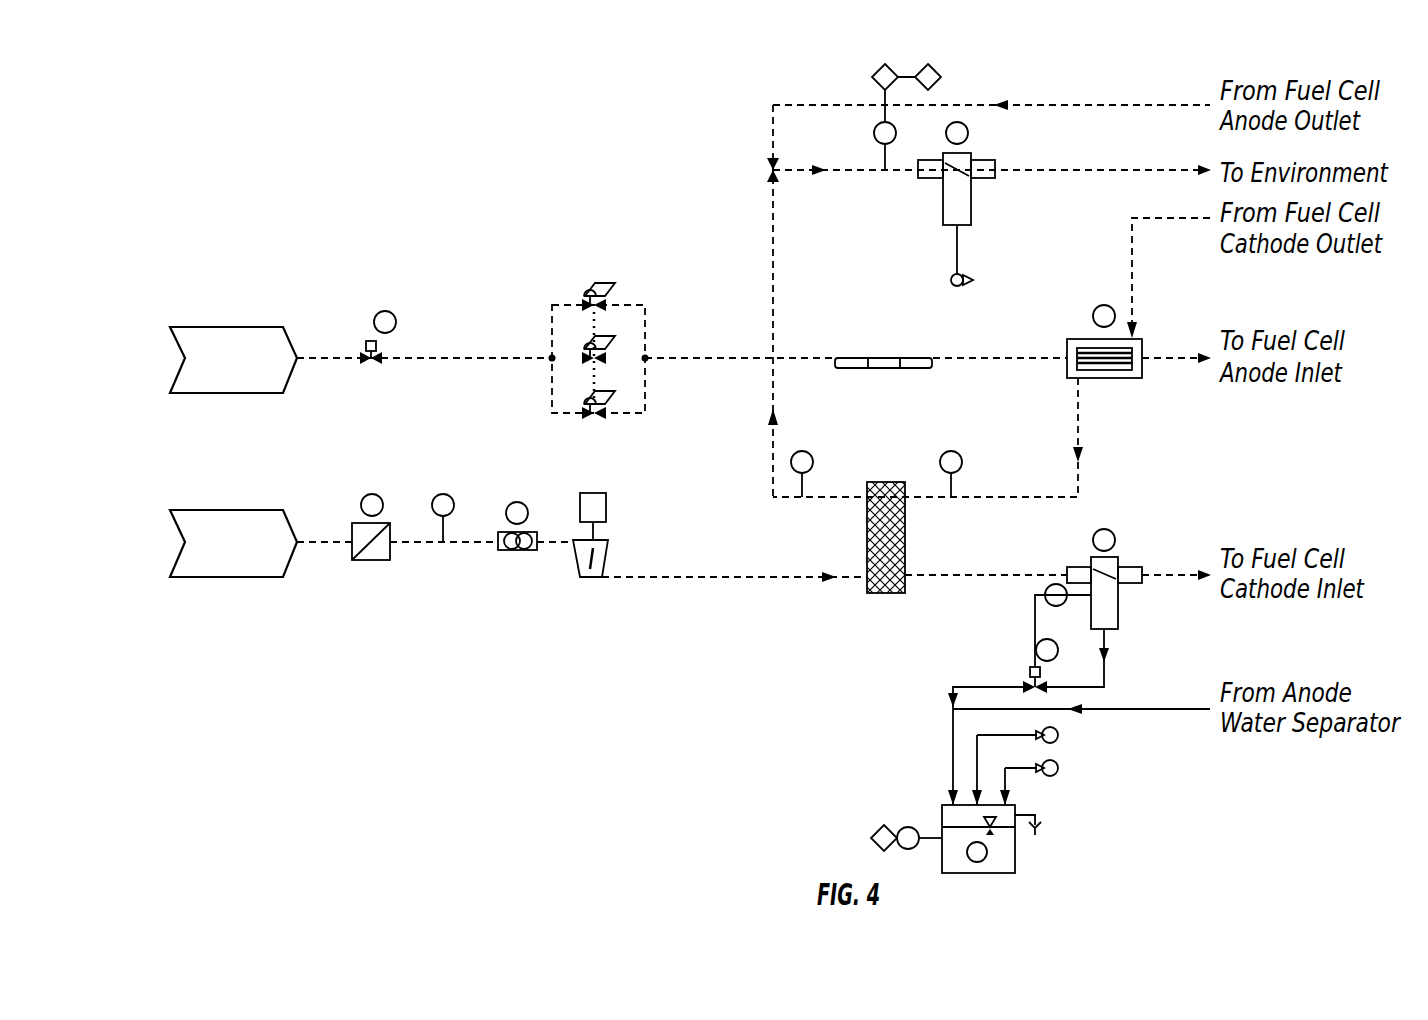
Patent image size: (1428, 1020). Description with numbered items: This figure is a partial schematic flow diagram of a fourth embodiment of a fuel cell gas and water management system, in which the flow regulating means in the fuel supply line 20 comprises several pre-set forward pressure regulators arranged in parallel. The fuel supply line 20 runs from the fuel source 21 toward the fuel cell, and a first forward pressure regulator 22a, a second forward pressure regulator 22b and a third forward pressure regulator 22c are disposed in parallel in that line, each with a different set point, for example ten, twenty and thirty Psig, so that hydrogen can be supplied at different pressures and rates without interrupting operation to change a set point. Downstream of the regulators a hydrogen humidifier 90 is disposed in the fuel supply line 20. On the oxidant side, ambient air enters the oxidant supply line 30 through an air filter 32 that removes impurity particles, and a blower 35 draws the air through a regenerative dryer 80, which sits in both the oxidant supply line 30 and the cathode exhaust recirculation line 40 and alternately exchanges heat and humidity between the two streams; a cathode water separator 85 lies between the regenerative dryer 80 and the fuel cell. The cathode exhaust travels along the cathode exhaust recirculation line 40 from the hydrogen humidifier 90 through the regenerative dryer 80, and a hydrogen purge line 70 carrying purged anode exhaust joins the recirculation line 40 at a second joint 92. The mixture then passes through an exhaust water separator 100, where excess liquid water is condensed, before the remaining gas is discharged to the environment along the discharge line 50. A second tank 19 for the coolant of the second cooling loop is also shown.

The second tank 19 is at (1017, 862).
The fuel supply line 20 is at (521, 356).
The fuel source 21 is at (236, 327).
The first forward pressure regulator 22a is at (608, 290).
The second forward pressure regulator 22b is at (608, 345).
The third forward pressure regulator 22c is at (608, 398).
The oxidant supply line 30 is at (300, 544).
The air filter 32 is at (374, 560).
The blower 35 is at (593, 578).
The cathode exhaust recirculation line 40 is at (1152, 218).
The discharge line 50 is at (1125, 170).
The hydrogen purge line 70 is at (1120, 105).
The regenerative dryer 80 is at (882, 482).
The cathode water separator 85 is at (1112, 583).
The hydrogen humidifier 90 is at (1097, 348).
The second joint 92 is at (770, 170).
The exhaust water separator 100 is at (955, 178).